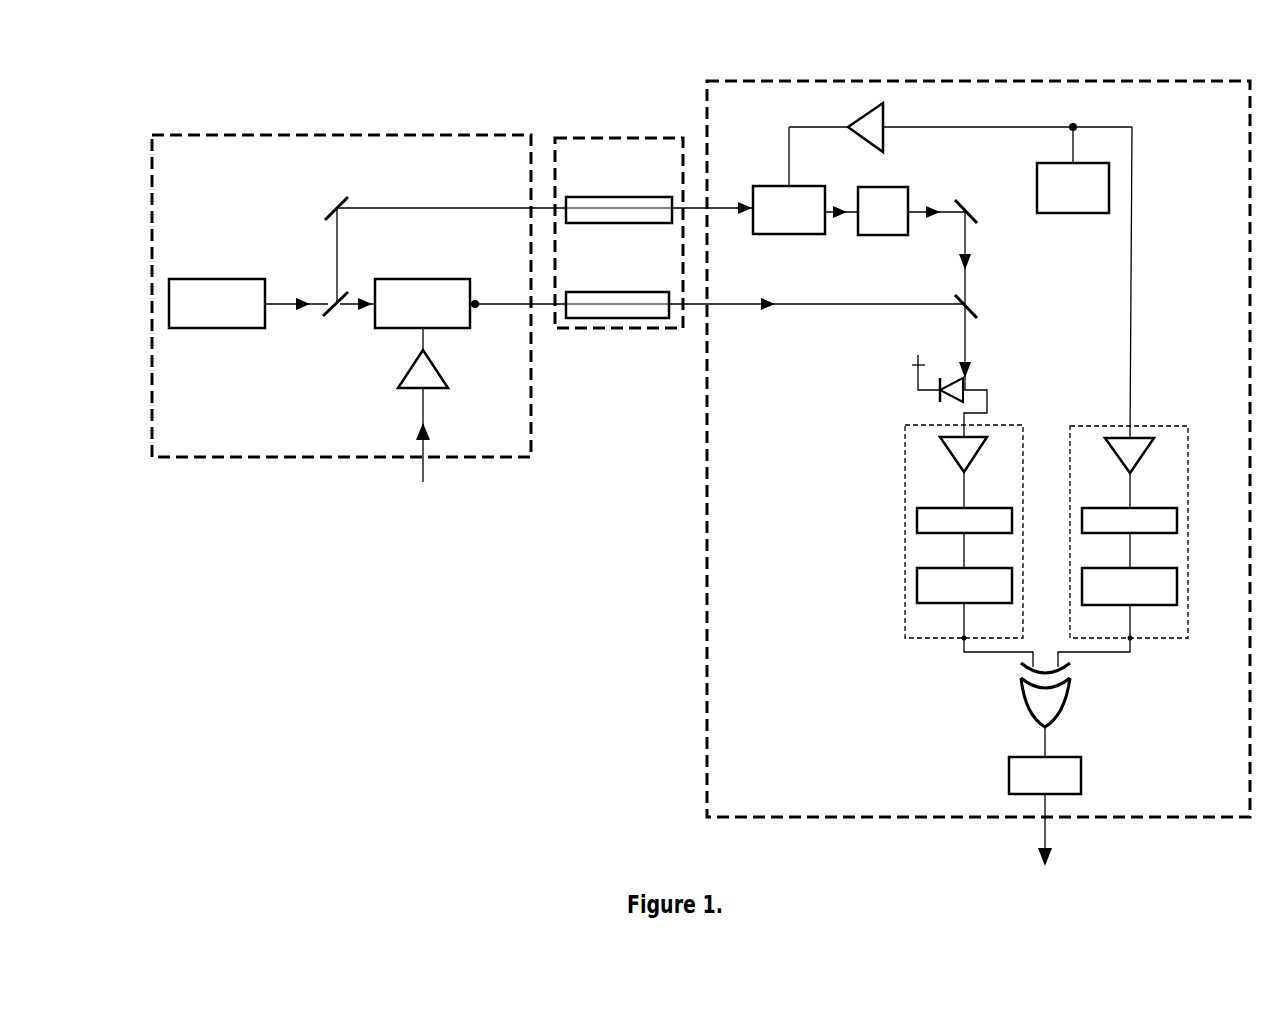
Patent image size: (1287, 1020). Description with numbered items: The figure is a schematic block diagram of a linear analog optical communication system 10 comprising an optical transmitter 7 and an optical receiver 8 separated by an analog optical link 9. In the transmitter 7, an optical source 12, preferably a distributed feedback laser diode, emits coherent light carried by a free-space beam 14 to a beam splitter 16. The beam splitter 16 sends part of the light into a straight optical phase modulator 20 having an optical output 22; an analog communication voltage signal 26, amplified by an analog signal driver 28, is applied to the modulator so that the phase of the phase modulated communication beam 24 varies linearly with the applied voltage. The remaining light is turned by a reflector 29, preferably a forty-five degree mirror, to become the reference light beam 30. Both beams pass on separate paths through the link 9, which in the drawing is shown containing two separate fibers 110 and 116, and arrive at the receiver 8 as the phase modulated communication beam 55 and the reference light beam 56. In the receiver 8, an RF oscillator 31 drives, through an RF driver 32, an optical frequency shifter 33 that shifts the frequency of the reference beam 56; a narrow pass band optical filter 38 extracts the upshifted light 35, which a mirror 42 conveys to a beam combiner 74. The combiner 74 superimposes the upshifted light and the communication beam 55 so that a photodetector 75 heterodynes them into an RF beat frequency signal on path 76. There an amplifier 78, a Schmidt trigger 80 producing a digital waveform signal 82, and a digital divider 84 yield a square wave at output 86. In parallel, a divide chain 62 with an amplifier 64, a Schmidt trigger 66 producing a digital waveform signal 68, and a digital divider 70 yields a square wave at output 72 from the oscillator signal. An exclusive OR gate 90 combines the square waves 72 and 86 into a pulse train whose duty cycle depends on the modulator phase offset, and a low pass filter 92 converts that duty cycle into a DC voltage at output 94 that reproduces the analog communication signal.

The linear analog optical communication system 10 is at (597, 58).
The optical transmitter 7 is at (397, 133).
The optical receiver 8 is at (1040, 82).
The analog optical link 9 is at (618, 135).
The optical source 12 is at (217, 303).
The free-space beam 14 is at (275, 307).
The beam splitter 16 is at (337, 317).
The straight optical phase modulator 20 is at (422, 303).
The optical output 22 is at (480, 310).
The phase modulated communication beam 24 is at (493, 300).
The analog communication voltage signal 26 is at (418, 468).
The analog signal driver 28 is at (425, 372).
The reflector 29 is at (338, 195).
The reference light beam 30 is at (425, 207).
The RF oscillator 31 is at (1007, 168).
The RF driver 32 is at (853, 122).
The optical frequency shifter 33 is at (805, 180).
The upshifted light 35 is at (950, 216).
The narrow pass band optical filter 38 is at (883, 211).
The mirror 42 is at (978, 207).
The phase modulated communication beam 55 is at (822, 301).
The reference light beam 56 is at (721, 206).
The divide chain 62 is at (1183, 424).
The amplifier 64 is at (1135, 450).
The Schmidt trigger 66 is at (1129, 520).
The digital waveform signal 68 is at (1133, 548).
The digital divider 70 is at (1170, 583).
The output 72 is at (1135, 642).
The beam combiner 74 is at (978, 314).
The photodetector 75 is at (990, 393).
The path 76 is at (905, 436).
The amplifier 78 is at (975, 455).
The Schmidt trigger 80 is at (964, 520).
The digital waveform signal 82 is at (963, 553).
The digital divider 84 is at (918, 588).
The output 86 is at (960, 640).
The exclusive OR gate 90 is at (1025, 703).
The low pass filter 92 is at (1085, 765).
The output 94 is at (1047, 830).
The optical fiber 110 is at (617, 290).
The optical fiber 116 is at (619, 195).